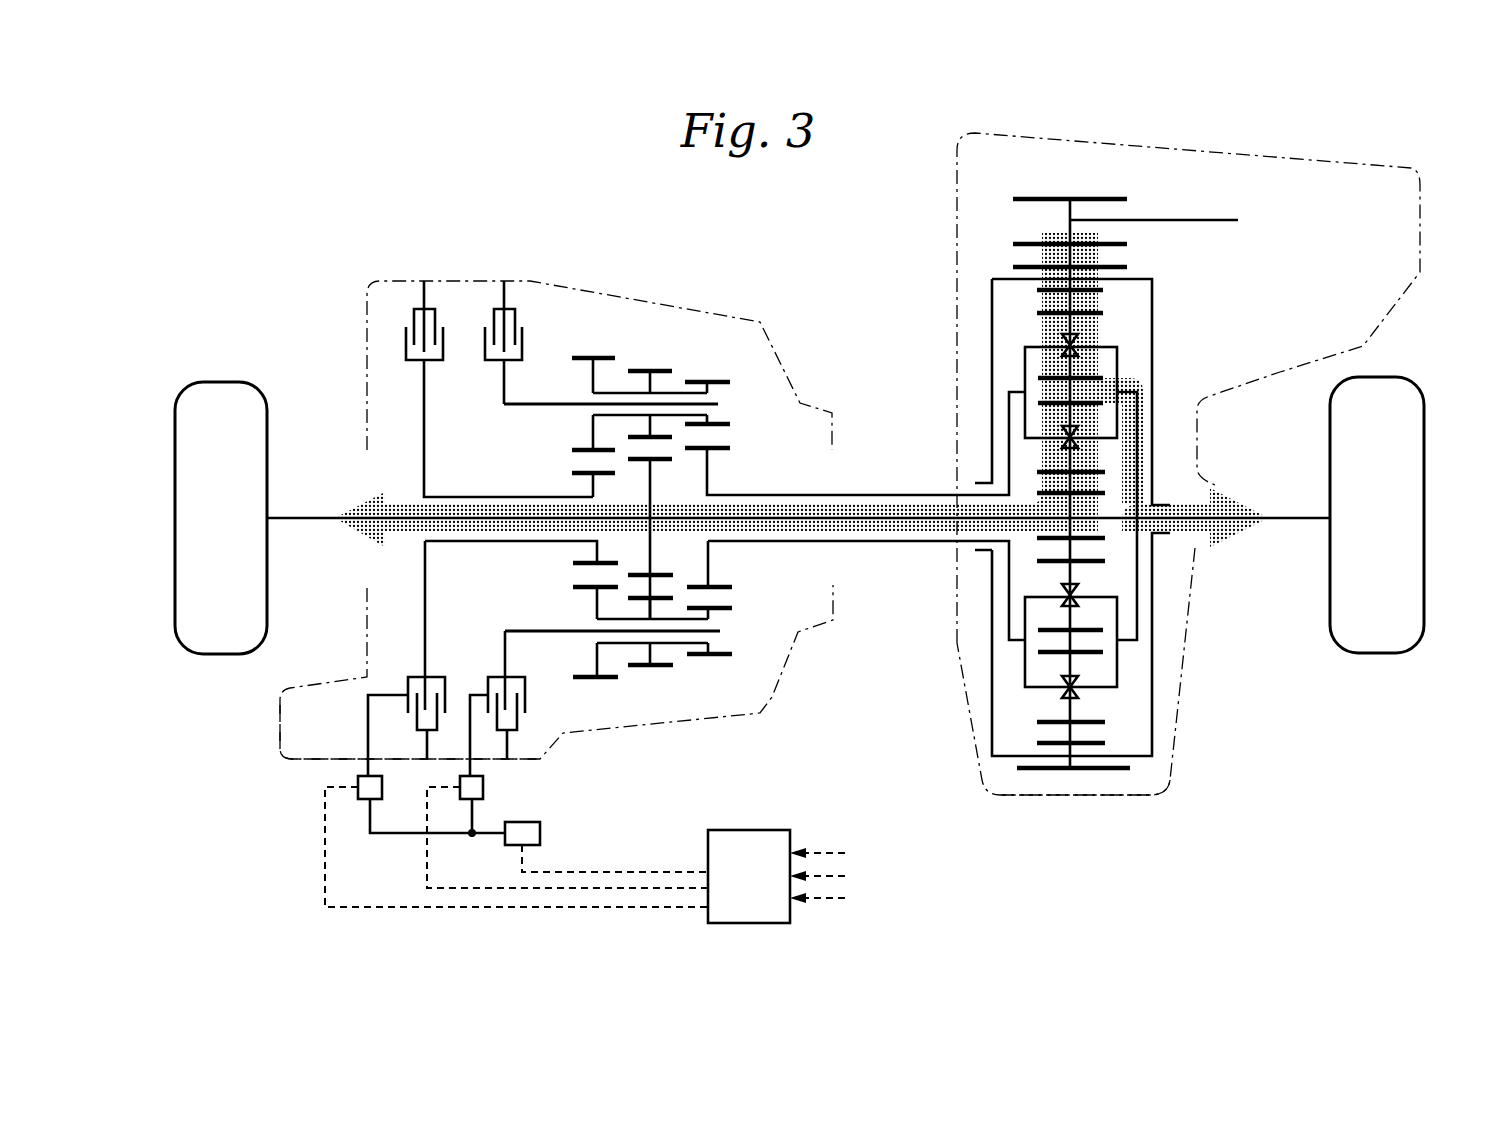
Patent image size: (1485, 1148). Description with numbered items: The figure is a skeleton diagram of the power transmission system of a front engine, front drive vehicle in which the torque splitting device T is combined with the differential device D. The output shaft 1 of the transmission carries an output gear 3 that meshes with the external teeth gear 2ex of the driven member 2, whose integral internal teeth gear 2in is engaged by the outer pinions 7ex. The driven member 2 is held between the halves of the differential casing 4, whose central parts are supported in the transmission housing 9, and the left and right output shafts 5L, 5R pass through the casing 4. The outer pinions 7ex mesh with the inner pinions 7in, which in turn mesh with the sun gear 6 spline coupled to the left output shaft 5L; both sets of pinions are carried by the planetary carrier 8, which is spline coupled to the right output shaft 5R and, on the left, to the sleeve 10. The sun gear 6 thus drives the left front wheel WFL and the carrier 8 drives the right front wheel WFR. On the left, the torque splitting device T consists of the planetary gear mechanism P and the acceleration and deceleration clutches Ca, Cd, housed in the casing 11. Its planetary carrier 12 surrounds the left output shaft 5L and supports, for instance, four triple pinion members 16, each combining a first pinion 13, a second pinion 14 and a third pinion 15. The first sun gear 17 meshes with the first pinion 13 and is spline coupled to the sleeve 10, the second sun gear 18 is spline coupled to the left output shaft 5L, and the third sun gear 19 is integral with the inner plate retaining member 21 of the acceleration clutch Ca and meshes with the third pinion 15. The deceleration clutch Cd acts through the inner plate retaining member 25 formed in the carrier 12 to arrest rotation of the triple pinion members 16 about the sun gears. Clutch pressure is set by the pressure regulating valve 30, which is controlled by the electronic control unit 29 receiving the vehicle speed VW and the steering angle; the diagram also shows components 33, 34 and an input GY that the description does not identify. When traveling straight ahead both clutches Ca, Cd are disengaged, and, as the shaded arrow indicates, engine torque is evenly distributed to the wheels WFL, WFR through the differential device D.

The output shaft 1 is at (1195, 220).
The driven member 2 is at (1138, 283).
The external teeth gear 2ex is at (1125, 266).
The internal teeth gear 2in is at (1100, 291).
The output gear 3 is at (1042, 197).
The differential casing 4 is at (1152, 710).
The left output shaft 5L is at (305, 520).
The right output shaft 5R is at (1303, 522).
The sun gear 6 is at (1090, 540).
The inner pinions 7in is at (1085, 476).
The outer pinions 7ex is at (1037, 313).
The planetary carrier 8 is at (1137, 615).
The transmission housing 9 is at (1172, 788).
The sleeve 10 is at (882, 545).
The casing 11 is at (280, 732).
The planetary carrier 12 is at (532, 630).
The first pinion 13 is at (738, 517).
The second pinion 14 is at (665, 371).
The third pinion 15 is at (607, 358).
The triple pinion members 16 is at (682, 517).
The first sun gear 17 is at (725, 448).
The second sun gear 18 is at (665, 455).
The third sun gear 19 is at (575, 452).
The inner plate retaining member 21 is at (424, 428).
The inner plate retaining member 25 is at (503, 370).
The electronic control unit 29 is at (778, 893).
The pressure regulating valve 30 is at (540, 828).
The solenoid valve 33 is at (483, 786).
The solenoid valve 34 is at (358, 782).
The acceleration clutch Ca is at (396, 322).
The deceleration clutch Cd is at (531, 314).
The differential device D is at (1186, 384).
The planetary gear mechanism P is at (751, 517).
The torque splitting device T is at (464, 268).
The left front wheel WFL is at (225, 392).
The right front wheel WFR is at (1415, 402).
The lateral acceleration signal GY is at (838, 853).
The vehicle speed VW is at (840, 876).